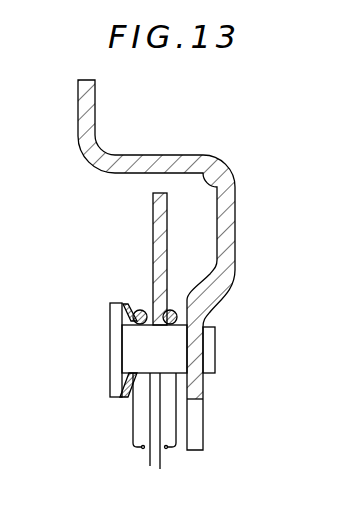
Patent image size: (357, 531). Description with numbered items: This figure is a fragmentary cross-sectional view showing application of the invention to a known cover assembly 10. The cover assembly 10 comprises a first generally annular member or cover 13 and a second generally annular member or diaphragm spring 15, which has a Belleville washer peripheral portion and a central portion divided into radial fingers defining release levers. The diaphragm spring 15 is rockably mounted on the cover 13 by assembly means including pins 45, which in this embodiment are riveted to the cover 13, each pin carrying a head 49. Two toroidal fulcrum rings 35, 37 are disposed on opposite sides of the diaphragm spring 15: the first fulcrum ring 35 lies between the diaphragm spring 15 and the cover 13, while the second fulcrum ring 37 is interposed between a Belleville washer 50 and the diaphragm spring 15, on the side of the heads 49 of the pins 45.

The cover assembly 10 is at (187, 265).
The cover 13 is at (236, 182).
The diaphragm spring 15 is at (152, 203).
The first fulcrum ring 35 is at (175, 310).
The second fulcrum ring 37 is at (139, 310).
The pins 45 is at (170, 360).
The heads 49 is at (115, 342).
The Belleville washer 50 is at (124, 396).